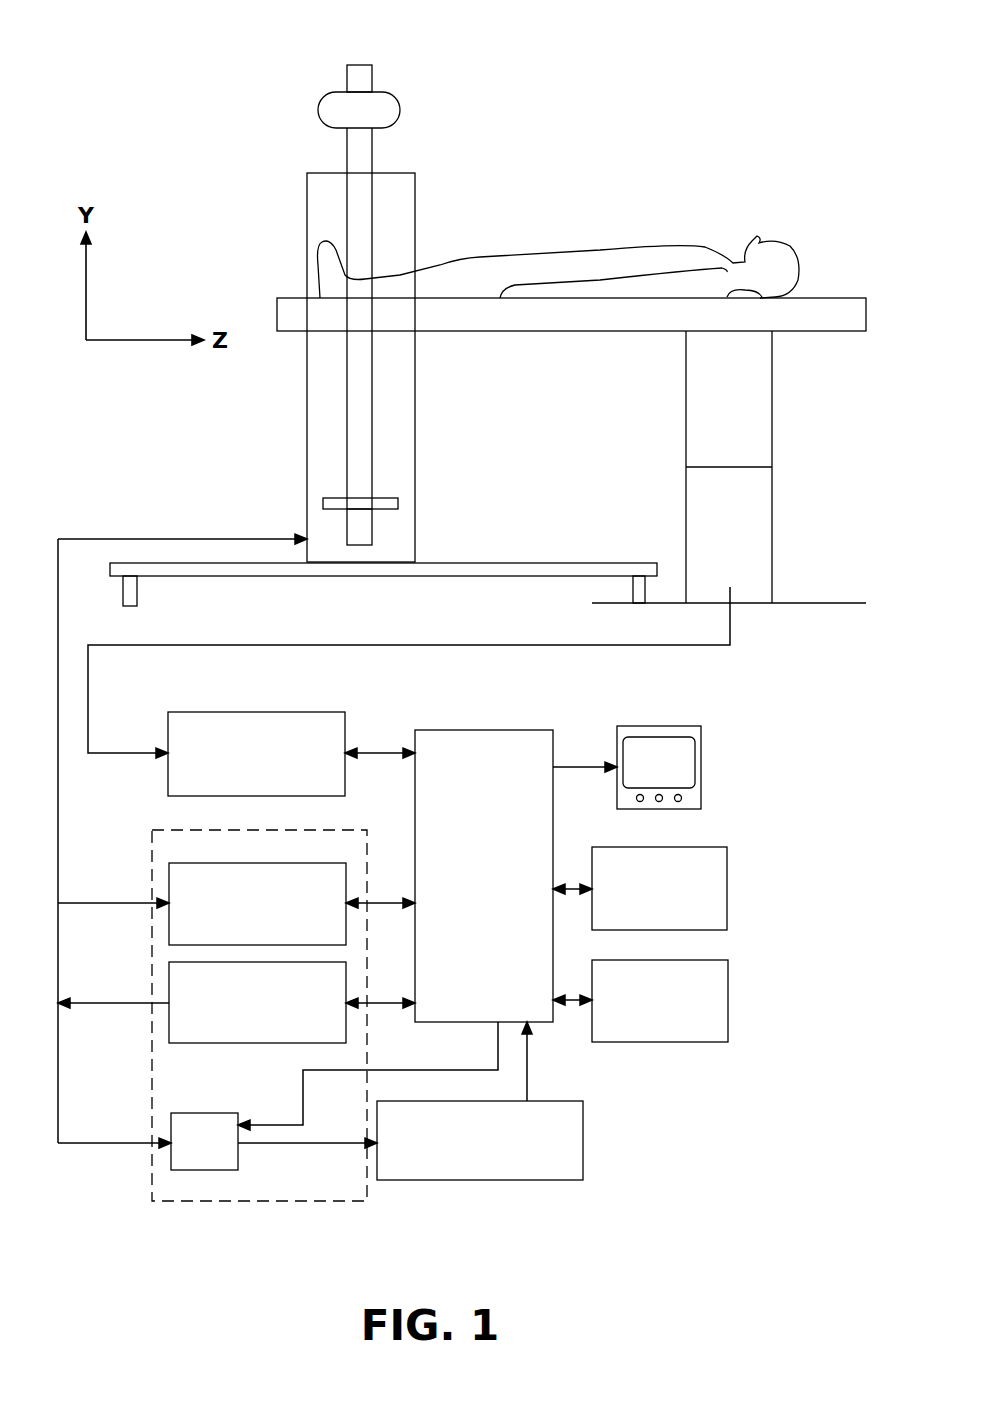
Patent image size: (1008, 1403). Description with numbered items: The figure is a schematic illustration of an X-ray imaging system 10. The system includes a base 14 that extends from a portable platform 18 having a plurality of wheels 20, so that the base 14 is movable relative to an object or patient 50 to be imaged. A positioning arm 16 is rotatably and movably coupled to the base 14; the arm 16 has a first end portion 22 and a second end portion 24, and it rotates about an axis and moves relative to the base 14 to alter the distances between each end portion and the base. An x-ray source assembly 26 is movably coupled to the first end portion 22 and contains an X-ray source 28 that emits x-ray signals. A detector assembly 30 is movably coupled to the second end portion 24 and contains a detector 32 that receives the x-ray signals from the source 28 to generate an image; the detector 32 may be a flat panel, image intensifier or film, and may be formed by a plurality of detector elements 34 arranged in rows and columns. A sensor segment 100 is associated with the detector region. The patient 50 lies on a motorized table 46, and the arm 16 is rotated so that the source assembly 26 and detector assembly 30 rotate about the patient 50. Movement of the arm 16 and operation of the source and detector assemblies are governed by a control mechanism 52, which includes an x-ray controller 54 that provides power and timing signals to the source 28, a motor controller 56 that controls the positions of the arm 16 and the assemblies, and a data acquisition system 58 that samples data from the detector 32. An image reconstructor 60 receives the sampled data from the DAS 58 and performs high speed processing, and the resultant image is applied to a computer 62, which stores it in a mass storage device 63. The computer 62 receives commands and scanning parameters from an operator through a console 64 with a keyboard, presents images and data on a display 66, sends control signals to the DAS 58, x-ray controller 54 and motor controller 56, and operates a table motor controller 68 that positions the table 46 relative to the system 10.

The imaging system 10 is at (226, 178).
The base 14 is at (415, 173).
The positioning arm 16 is at (372, 65).
The first end portion 22 is at (358, 82).
The x-ray source assembly 26 is at (405, 99).
The X-ray source 28 is at (358, 128).
The second end portion 24 is at (367, 536).
The detector assembly 30 is at (407, 500).
The detector 32 is at (383, 500).
The detector elements 34 is at (357, 498).
The sensor segments 100 is at (323, 500).
The table 46 is at (818, 297).
The patient 50 is at (778, 245).
The portable platform 18 is at (350, 577).
The wheels 20 is at (138, 590).
The control mechanism 52 is at (197, 1203).
The x-ray controller 54 is at (323, 863).
The motor controller 56 is at (348, 982).
The data acquisition system (DAS) 58 is at (238, 1163).
The image processor/reconstructor 60 is at (520, 1180).
The computer 62 is at (471, 922).
The mass storage device 63 is at (683, 1043).
The console 64 is at (700, 847).
The display 66 is at (660, 727).
The table motor controller 68 is at (287, 712).